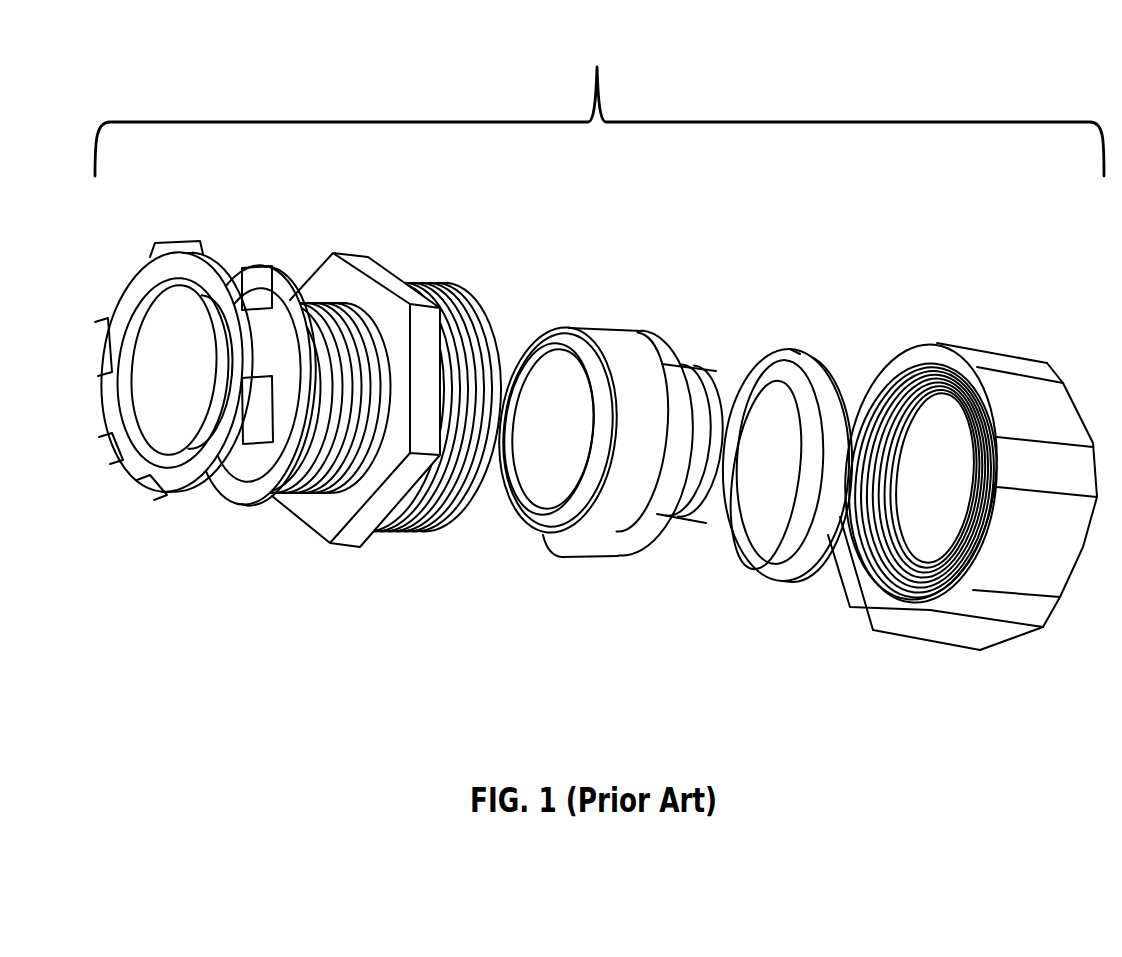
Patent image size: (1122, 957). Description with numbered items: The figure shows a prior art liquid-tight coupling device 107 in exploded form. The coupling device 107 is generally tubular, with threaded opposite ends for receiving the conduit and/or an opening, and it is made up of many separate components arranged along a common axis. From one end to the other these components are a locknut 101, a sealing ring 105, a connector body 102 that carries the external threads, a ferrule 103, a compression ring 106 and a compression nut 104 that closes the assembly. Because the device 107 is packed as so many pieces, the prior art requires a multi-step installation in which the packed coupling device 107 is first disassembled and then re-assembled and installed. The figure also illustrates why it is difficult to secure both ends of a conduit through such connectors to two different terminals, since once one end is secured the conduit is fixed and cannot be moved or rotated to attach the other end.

The locknut 101 is at (147, 487).
The connector body 102 is at (370, 272).
The ferrule 103 is at (592, 343).
The compression nut 104 is at (933, 348).
The sealing ring 105 is at (242, 504).
The compression ring 106 is at (774, 582).
The coupling device 107 is at (599, 97).